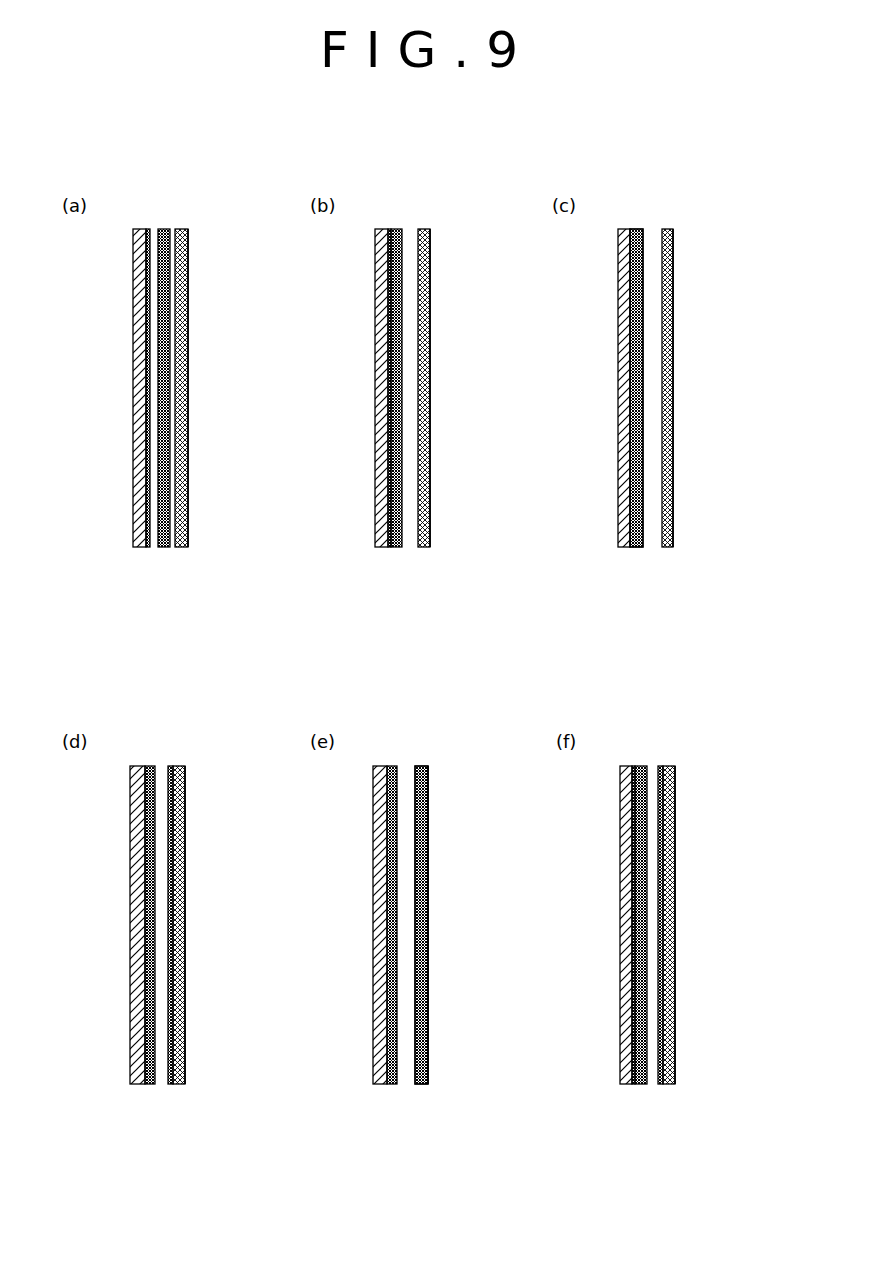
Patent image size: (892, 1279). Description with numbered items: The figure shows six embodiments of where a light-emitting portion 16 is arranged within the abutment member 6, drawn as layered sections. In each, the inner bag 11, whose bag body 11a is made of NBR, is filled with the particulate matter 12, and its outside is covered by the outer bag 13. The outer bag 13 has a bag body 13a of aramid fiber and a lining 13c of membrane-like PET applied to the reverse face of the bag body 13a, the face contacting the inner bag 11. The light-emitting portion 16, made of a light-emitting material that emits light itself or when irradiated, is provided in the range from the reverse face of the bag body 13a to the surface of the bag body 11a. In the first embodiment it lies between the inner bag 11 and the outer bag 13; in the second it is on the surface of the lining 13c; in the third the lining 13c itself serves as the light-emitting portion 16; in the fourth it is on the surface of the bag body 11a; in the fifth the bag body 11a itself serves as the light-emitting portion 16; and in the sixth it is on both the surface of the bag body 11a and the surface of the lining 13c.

The abutment member 6 is at (403, 693).
The inner bag 11 is at (466, 693).
The bag body 11a is at (189, 374).
The particulate matter 12 is at (197, 469).
The outer bag 13 is at (345, 693).
The bag body 13a is at (133, 463).
The lining 13c is at (143, 499).
The light-emitting portion 16 is at (164, 555).